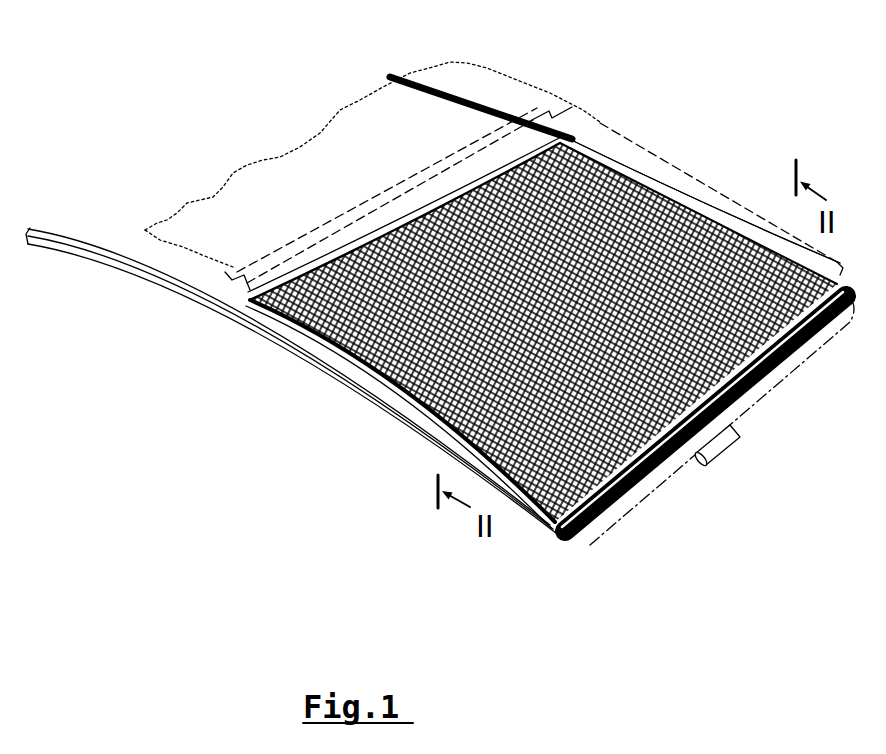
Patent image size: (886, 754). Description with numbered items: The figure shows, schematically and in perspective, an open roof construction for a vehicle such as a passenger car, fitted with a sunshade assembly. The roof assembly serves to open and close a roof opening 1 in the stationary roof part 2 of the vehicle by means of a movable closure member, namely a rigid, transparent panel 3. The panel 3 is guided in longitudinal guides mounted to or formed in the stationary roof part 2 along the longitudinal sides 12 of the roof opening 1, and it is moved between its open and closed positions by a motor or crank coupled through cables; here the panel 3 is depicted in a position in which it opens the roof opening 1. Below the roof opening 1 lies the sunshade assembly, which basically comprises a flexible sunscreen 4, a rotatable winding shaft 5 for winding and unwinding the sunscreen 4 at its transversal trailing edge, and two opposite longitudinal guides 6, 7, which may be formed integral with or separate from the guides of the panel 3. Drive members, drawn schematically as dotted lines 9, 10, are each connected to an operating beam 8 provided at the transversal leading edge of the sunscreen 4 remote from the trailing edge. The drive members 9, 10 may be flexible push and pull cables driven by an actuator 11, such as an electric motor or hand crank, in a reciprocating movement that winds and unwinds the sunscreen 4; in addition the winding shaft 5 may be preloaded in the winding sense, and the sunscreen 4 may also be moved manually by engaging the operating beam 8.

The roof opening 1 is at (513, 150).
The stationary roof part 2 is at (600, 97).
The panel 3 is at (457, 83).
The sunscreen 4 is at (636, 187).
The winding shaft 5 is at (647, 473).
The longitudinal guide 6 is at (383, 400).
The longitudinal guide 7 is at (689, 190).
The operating beam 8 is at (407, 220).
The drive member 9 is at (327, 360).
The drive member 10 is at (788, 387).
The actuator 11 is at (720, 443).
The longitudinal sides 12 is at (233, 283).